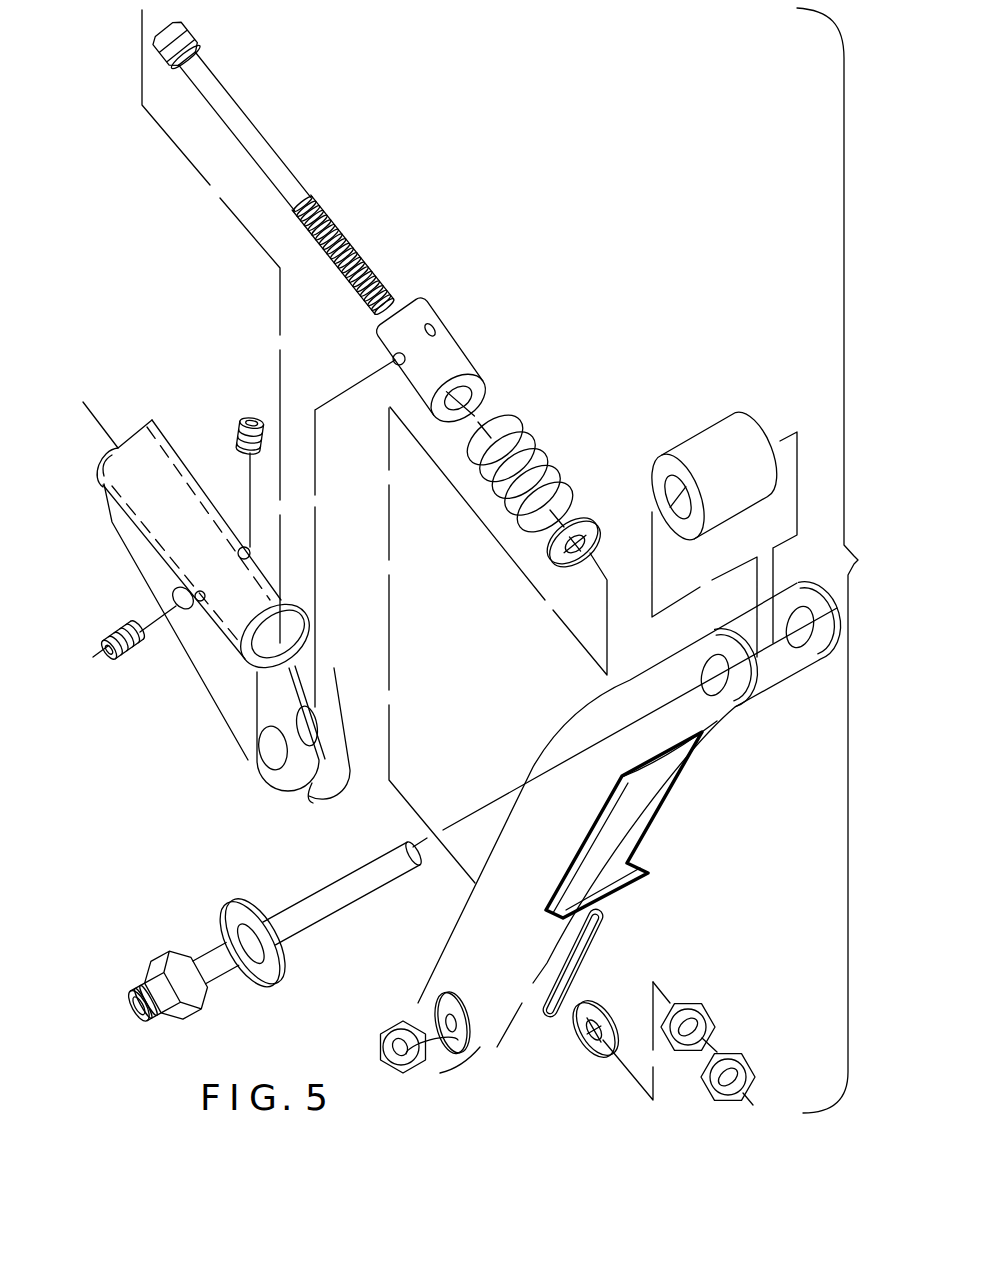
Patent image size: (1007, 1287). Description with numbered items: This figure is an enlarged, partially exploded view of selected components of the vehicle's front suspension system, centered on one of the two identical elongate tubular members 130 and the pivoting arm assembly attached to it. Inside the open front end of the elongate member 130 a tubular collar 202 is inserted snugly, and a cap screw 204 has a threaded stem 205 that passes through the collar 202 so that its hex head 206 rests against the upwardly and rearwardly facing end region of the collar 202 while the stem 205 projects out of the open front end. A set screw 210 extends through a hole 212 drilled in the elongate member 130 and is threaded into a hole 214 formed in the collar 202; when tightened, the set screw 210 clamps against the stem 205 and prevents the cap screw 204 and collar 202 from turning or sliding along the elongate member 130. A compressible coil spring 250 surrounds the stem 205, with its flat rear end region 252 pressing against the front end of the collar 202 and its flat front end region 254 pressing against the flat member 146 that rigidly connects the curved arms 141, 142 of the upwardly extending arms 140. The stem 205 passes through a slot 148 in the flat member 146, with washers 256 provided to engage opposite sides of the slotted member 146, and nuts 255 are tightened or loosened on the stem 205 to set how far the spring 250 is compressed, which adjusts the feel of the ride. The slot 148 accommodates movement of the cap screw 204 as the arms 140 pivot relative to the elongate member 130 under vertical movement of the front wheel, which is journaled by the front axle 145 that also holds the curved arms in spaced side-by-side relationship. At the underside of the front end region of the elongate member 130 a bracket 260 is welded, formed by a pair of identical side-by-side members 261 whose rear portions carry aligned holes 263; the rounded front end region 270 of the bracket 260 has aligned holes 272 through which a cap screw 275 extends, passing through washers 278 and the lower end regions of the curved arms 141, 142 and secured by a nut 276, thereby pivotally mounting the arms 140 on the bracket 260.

The elongate members 130 is at (174, 433).
The upwardly extending arms 140 is at (629, 827).
The curved arm 141 is at (678, 727).
The curved arm 142 is at (782, 672).
The front axle 145 is at (330, 908).
The flat member 146 is at (626, 895).
The slots 148 is at (590, 940).
The tubular collar 202 is at (457, 357).
The cap screw 204 is at (264, 127).
The stem 205 is at (288, 167).
The hex head 206 is at (193, 32).
The set screw 210 is at (260, 419).
The hole 212 is at (238, 550).
The hole 214 is at (432, 326).
The coil spring 250 is at (547, 468).
The rear end region 252 is at (500, 436).
The front end region 254 is at (572, 497).
The nut 255 is at (733, 1050).
The washer 256 is at (586, 513).
The bracket 260 is at (155, 574).
The side-by-side members 261 is at (247, 700).
The aligned holes 263 is at (175, 603).
The front end region 270 is at (312, 785).
The aligned holes 272 is at (314, 722).
The cap screw 275 is at (381, 1056).
The nut 276 is at (434, 1057).
The washer 278 is at (450, 996).